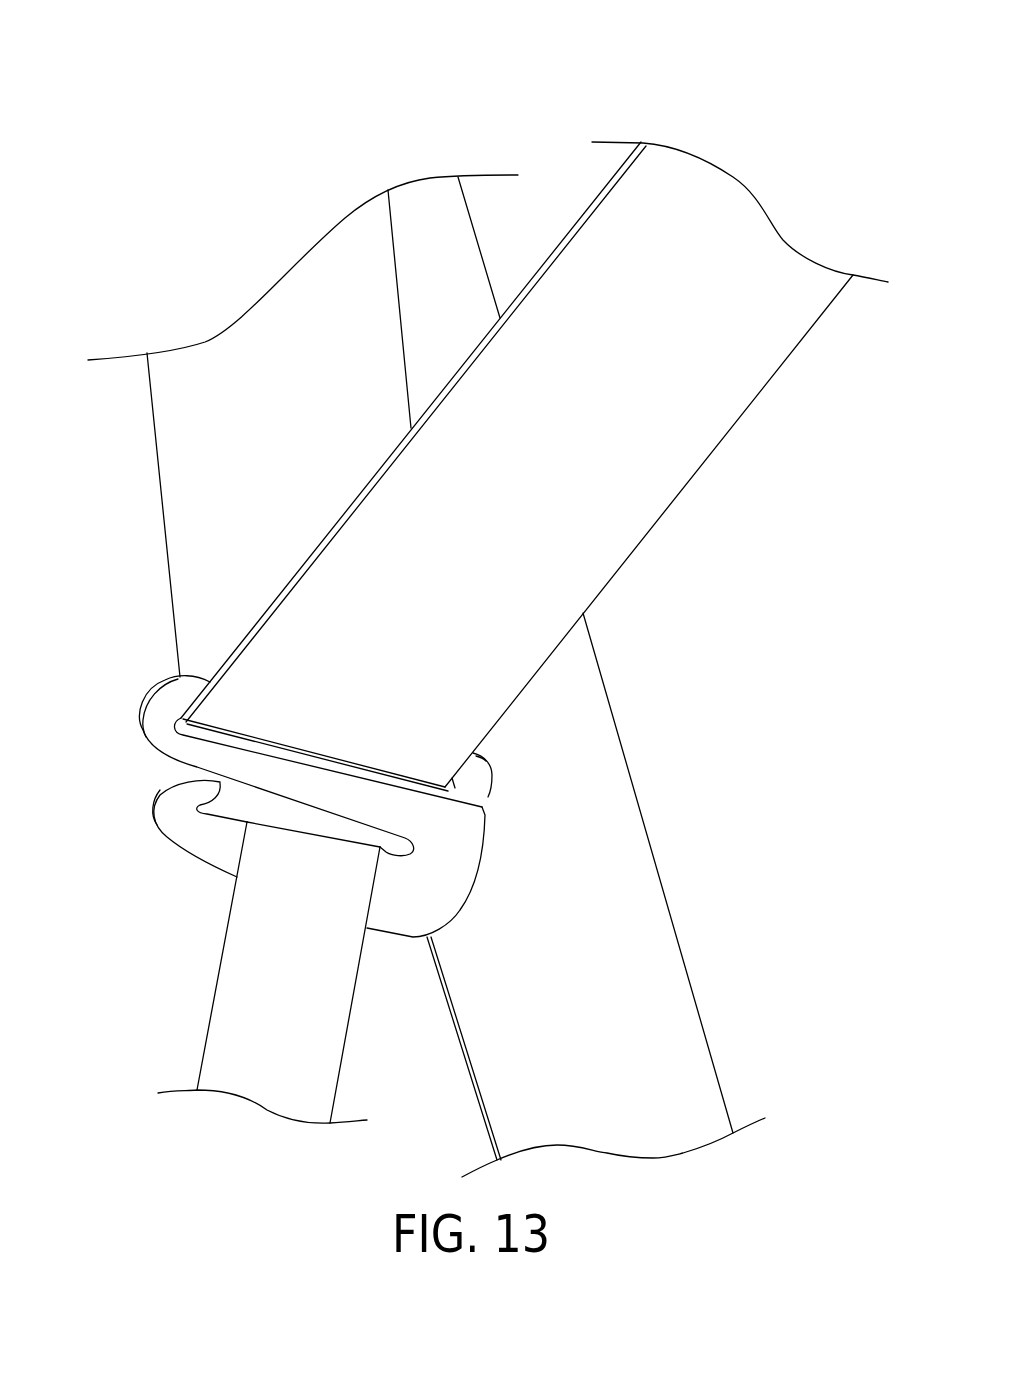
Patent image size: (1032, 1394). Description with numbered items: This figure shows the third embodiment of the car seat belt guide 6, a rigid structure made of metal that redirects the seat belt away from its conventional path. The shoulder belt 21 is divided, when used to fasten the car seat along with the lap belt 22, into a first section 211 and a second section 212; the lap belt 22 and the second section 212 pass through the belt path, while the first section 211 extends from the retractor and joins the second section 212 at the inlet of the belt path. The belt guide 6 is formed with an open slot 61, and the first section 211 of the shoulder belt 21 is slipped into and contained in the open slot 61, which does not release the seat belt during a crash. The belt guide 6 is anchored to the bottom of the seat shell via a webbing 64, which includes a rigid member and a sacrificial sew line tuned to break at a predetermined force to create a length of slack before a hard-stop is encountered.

The shoulder belt 21 is at (488, 395).
The first section 211 is at (673, 335).
The second section 212 is at (298, 387).
The lap belt 22 is at (632, 903).
The belt guide 6 is at (158, 710).
The open slot 61 is at (450, 797).
The webbing 64 is at (248, 985).